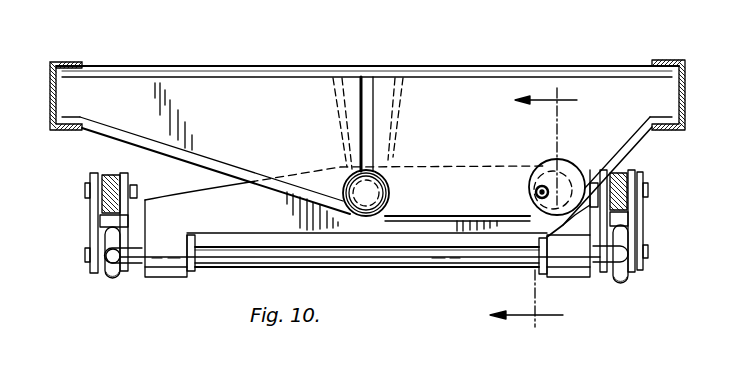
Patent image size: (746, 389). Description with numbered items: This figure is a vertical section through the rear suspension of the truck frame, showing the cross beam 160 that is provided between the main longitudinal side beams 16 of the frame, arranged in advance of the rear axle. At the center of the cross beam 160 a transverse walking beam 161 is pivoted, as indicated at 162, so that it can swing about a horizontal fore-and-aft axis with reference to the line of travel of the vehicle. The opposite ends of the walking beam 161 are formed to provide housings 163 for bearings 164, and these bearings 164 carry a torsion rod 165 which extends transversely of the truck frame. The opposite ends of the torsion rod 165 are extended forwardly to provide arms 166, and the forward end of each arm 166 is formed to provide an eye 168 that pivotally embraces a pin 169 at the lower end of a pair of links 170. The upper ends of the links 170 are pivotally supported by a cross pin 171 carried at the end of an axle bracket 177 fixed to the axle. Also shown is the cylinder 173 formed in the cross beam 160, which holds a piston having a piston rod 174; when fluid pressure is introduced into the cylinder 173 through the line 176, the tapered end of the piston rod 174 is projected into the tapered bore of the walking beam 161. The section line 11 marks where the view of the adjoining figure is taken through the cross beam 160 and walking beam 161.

The section line 11 is at (548, 208).
The main longitudinal side beam 16 is at (63, 63).
The cross beam 160 is at (295, 88).
The walking beam 161 is at (225, 187).
The pivot 162 is at (390, 192).
The housing 163 is at (167, 274).
The bearing 164 is at (190, 276).
The torsion rod 165 is at (433, 260).
The arm 166 is at (107, 280).
The eye 168 is at (113, 283).
The pin 169 is at (85, 257).
The link 170 is at (100, 222).
The cross pin 171 is at (85, 190).
The cylinder 173 is at (550, 167).
The piston rod 174 is at (540, 238).
The line 176 is at (536, 192).
The axle bracket 177 is at (113, 174).